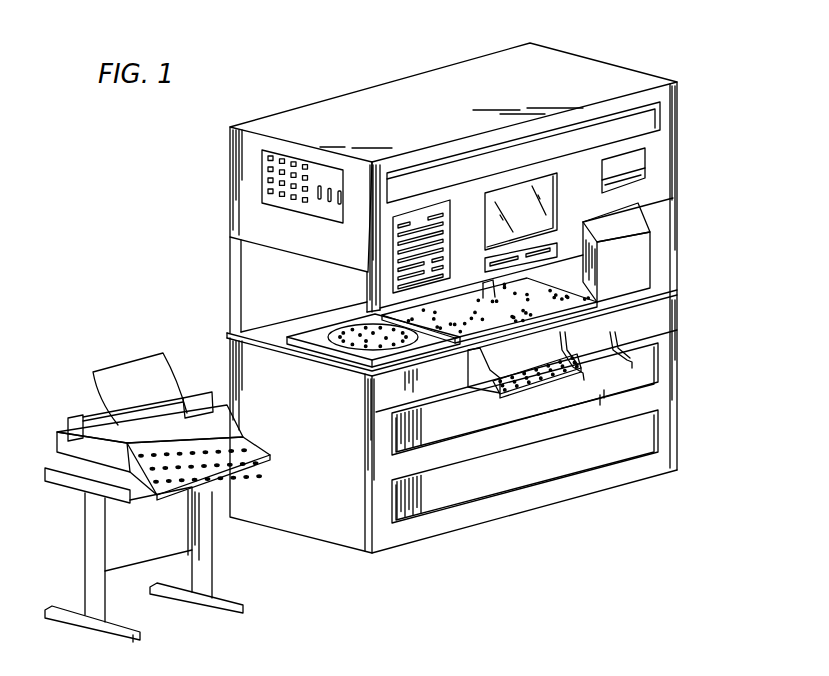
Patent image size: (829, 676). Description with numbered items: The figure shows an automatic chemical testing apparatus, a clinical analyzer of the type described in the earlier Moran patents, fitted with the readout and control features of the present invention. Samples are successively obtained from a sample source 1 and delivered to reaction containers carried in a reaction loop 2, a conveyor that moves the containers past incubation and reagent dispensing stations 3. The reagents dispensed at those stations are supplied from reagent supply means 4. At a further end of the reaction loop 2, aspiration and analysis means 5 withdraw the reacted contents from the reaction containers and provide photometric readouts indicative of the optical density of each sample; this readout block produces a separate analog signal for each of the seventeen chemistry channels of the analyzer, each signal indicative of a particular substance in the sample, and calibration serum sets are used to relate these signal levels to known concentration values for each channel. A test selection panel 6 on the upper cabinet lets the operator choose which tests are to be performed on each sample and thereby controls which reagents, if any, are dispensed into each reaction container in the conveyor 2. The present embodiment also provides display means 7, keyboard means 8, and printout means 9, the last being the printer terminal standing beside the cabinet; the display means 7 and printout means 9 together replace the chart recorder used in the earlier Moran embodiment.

The sample source 1 is at (360, 340).
The reaction loop 2 is at (441, 326).
The incubation and reagent dispensing stations 3 is at (511, 305).
The reagent supply means 4 is at (670, 362).
The aspiration and analysis means 5 is at (633, 262).
The test selection panel 6 is at (423, 222).
The display means 7 is at (524, 190).
The keyboard means 8 is at (540, 368).
The printout means 9 is at (83, 465).